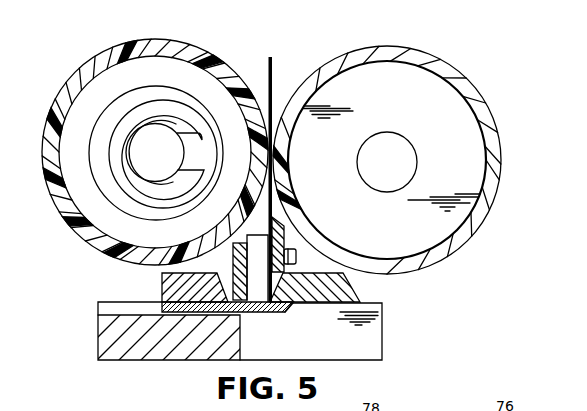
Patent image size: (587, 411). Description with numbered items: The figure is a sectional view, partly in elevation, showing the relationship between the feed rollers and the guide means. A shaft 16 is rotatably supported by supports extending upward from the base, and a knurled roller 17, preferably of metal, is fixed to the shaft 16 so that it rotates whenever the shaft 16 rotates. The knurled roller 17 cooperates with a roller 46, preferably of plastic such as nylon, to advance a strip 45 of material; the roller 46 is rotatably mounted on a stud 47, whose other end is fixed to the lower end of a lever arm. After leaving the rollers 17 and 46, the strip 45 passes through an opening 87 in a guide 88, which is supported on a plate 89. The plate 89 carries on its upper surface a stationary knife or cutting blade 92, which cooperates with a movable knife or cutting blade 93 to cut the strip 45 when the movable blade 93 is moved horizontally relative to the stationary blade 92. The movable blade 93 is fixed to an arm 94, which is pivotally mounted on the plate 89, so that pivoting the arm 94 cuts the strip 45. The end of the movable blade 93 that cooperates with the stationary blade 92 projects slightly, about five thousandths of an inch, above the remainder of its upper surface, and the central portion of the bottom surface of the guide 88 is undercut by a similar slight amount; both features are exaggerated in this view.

The roller 46 is at (112, 44).
The stud 47 is at (158, 172).
The strip of material 45 is at (276, 62).
The knurled roller 17 is at (483, 101).
The shaft 16 is at (408, 153).
The arm 94 is at (160, 278).
The guide 88 is at (160, 292).
The stationary knife or cutting blade 92 is at (360, 288).
The plate 89 is at (382, 333).
The movable knife or cutting blade 93 is at (282, 313).
The opening 87 is at (243, 316).